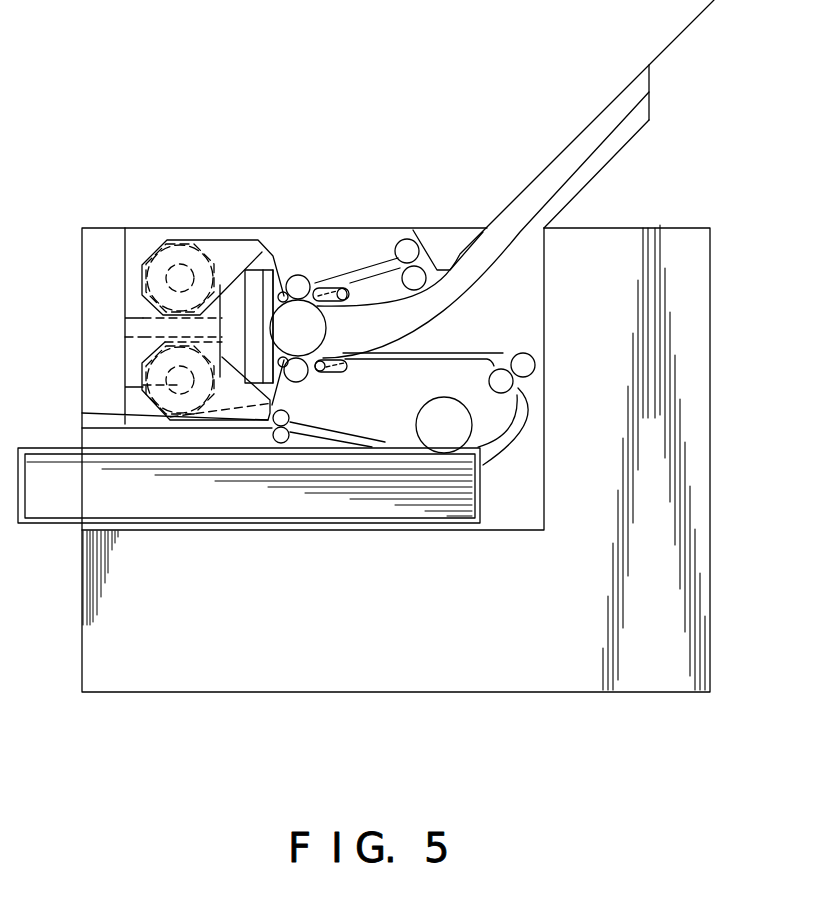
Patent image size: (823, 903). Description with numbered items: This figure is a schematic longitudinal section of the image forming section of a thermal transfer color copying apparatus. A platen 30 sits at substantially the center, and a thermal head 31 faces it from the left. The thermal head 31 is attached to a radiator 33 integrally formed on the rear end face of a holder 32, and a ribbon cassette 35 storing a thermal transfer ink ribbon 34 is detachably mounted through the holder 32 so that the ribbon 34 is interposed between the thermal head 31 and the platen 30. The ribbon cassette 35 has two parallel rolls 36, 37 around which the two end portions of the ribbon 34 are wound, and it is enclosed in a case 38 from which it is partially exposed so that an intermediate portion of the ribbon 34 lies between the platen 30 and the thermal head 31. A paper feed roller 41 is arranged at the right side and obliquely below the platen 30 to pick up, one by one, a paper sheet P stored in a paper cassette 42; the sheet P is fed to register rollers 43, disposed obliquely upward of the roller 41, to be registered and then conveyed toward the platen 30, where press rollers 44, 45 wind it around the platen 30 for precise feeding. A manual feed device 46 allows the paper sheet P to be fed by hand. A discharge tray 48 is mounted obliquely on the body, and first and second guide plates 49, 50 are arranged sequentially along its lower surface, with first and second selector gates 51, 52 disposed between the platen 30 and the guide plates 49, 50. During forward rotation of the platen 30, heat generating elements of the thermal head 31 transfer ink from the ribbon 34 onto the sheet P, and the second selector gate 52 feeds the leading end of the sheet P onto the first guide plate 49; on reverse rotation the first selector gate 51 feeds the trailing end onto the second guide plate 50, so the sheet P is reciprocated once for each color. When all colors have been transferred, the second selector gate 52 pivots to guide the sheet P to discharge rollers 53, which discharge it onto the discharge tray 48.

The platen 30 is at (330, 328).
The thermal head 31 is at (275, 262).
The holder 32 is at (238, 323).
The radiator 33 is at (248, 262).
The thermal transfer ink ribbon 34 is at (299, 275).
The ribbon cassette 35 is at (178, 250).
The roll 36 is at (165, 256).
The roll 37 is at (125, 384).
The case 38 is at (125, 290).
The paper feed roller 41 is at (422, 410).
The paper cassette 42 is at (482, 472).
The register rollers 43 is at (512, 353).
The press roller 44 is at (300, 381).
The press roller 45 is at (320, 280).
The manual feed device 46 is at (272, 440).
The discharge tray 48 is at (657, 56).
The first guide plate 49 is at (613, 130).
The second guide plate 50 is at (603, 166).
The first selector gate 51 is at (341, 375).
The second selector gate 52 is at (340, 284).
The discharge rollers 53 is at (400, 243).
The paper sheet P is at (368, 495).